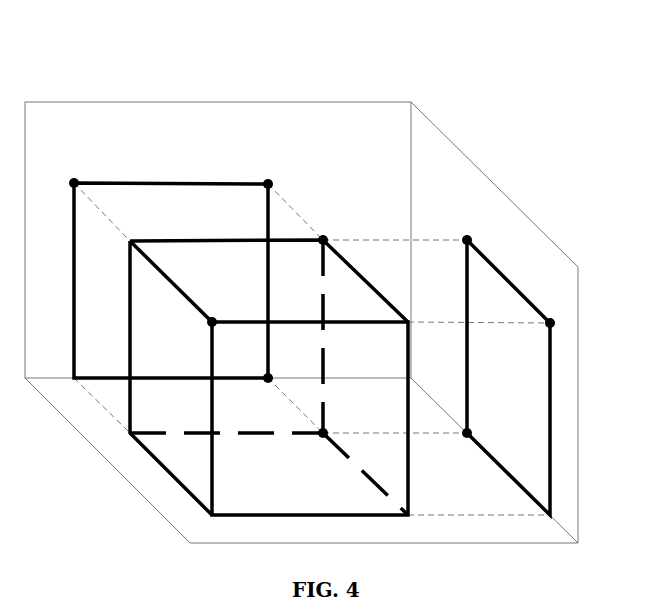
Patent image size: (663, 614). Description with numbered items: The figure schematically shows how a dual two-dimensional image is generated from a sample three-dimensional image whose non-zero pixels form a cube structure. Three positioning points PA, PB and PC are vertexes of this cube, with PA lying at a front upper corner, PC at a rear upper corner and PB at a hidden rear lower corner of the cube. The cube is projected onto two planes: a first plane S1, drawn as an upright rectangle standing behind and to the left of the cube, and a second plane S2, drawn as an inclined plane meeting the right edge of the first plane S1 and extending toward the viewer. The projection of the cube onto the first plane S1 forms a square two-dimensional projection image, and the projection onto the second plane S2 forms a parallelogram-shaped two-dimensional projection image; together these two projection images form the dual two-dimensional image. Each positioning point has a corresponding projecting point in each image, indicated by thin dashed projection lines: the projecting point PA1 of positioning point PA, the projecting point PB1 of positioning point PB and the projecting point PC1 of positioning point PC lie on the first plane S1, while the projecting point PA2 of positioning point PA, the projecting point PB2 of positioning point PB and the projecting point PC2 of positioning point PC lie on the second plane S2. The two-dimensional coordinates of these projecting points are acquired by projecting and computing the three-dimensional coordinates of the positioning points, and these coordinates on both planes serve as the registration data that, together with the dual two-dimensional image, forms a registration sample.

The first plane S1 is at (107, 102).
The second plane S2 is at (498, 186).
The positioning point PA is at (227, 310).
The positioning point PB is at (308, 445).
The positioning point PC is at (340, 228).
The projecting point PA1 is at (94, 170).
The projecting point PB1 is at (291, 368).
The projecting point PC1 is at (291, 173).
The projecting point PA2 is at (574, 325).
The projecting point PB2 is at (490, 423).
The projecting point PC2 is at (466, 226).